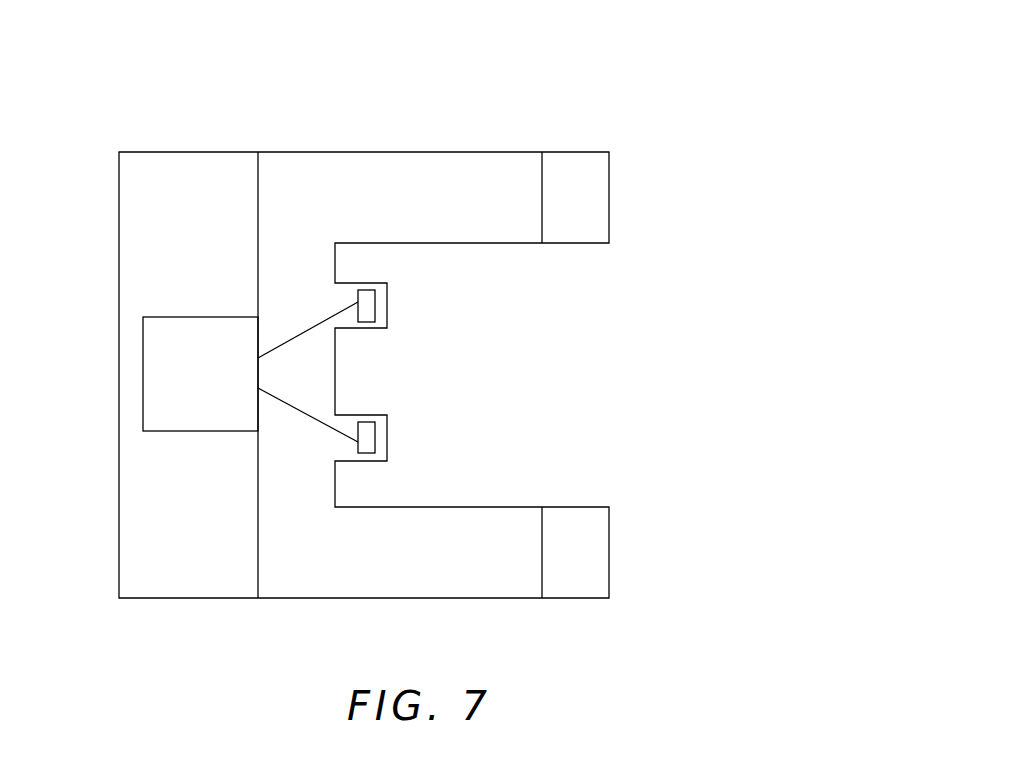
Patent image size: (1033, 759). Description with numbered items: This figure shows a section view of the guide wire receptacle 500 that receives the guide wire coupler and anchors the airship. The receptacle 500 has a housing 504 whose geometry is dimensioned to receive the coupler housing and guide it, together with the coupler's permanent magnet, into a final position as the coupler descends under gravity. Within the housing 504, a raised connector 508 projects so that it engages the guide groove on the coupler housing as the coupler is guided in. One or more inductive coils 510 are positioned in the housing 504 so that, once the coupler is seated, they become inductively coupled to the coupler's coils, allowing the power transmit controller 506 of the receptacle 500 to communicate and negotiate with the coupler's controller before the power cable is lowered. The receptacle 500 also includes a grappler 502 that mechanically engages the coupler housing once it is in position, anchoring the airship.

The guide wire receptacle 500 is at (507, 299).
The grappler 502 is at (563, 150).
The housing 504 is at (345, 150).
The power transmit controller 506 is at (250, 372).
The raised connector 508 is at (378, 305).
The inductive coil 510 is at (378, 440).